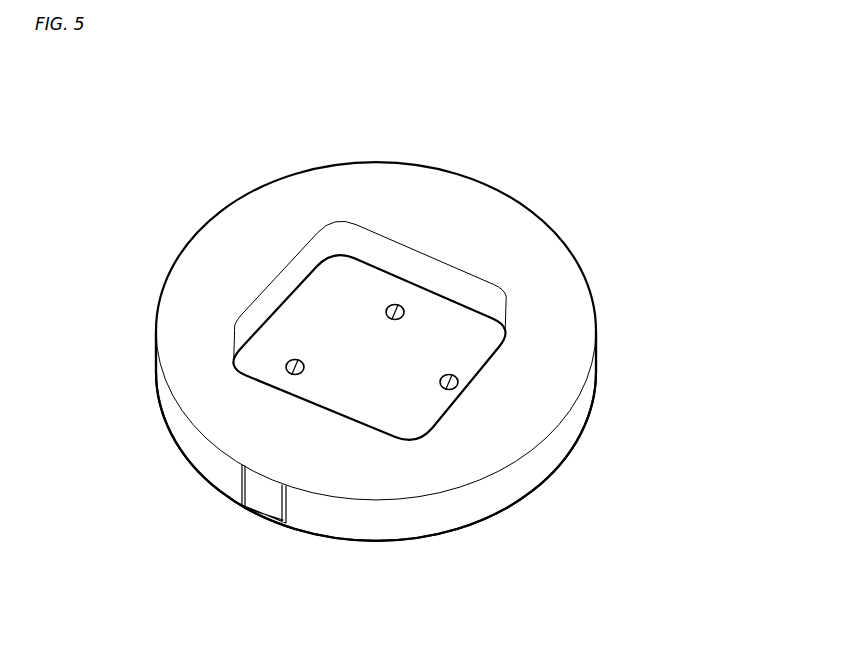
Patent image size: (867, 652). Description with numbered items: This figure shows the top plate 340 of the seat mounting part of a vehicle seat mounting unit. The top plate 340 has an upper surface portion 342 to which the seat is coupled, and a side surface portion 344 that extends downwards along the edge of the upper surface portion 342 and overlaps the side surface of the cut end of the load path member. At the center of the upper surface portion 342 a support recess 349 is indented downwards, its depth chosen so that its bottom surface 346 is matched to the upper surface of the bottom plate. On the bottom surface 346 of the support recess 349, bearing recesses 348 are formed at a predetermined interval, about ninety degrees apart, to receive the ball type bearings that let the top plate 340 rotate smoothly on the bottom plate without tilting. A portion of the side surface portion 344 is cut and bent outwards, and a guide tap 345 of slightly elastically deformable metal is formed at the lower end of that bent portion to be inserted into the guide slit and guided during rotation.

The top plate 340 is at (264, 182).
The upper surface portion 342 is at (193, 288).
The side surface portion 344 is at (210, 460).
The guide tap 345 is at (265, 497).
The bottom surface 346 is at (454, 327).
The bearing recesses 348 is at (458, 381).
The support recess 349 is at (437, 278).